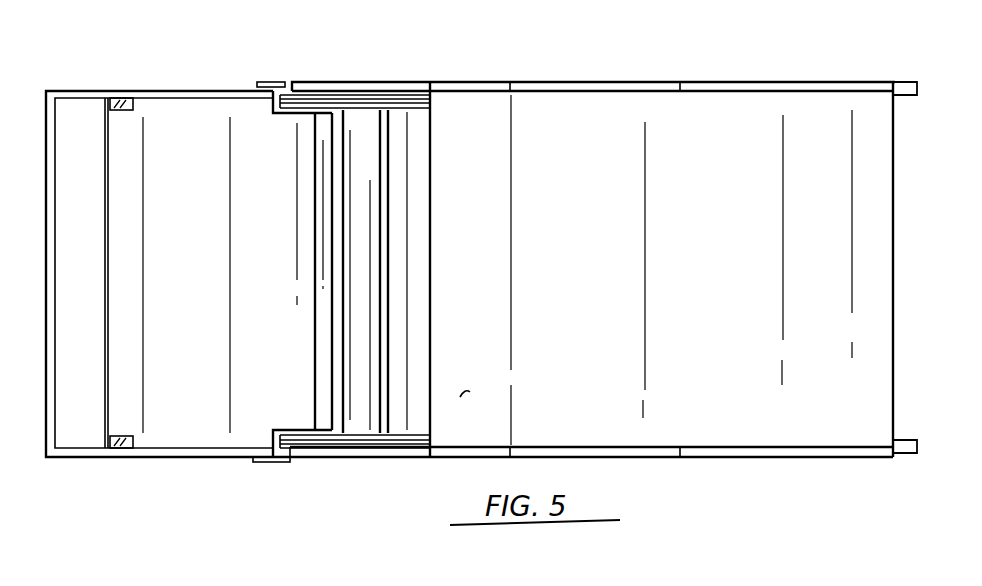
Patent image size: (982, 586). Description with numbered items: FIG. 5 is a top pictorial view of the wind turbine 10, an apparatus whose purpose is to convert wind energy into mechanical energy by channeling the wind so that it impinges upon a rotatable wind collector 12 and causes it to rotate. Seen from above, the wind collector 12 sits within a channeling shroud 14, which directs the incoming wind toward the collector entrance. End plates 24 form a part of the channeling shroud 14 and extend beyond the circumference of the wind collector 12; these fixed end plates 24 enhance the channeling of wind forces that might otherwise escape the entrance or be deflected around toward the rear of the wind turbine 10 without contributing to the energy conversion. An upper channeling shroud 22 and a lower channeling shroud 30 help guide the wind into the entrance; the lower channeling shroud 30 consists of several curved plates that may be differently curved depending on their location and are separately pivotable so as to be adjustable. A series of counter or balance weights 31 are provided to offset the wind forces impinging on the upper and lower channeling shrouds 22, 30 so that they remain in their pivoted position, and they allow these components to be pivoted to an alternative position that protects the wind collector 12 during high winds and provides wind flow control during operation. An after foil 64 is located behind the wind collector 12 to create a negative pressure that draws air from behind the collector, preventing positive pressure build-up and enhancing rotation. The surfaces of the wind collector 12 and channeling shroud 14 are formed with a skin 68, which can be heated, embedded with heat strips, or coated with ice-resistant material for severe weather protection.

The wind turbine 10 is at (416, 31).
The wind collector 12 is at (315, 350).
The channeling shroud 14 is at (172, 56).
The upper channeling shroud 22 is at (603, 191).
The end plates 24 is at (445, 82).
The lower channeling shroud 30 is at (108, 200).
The balance weights 31 is at (133, 104).
The after foil 64 is at (862, 81).
The skin 68 is at (462, 397).